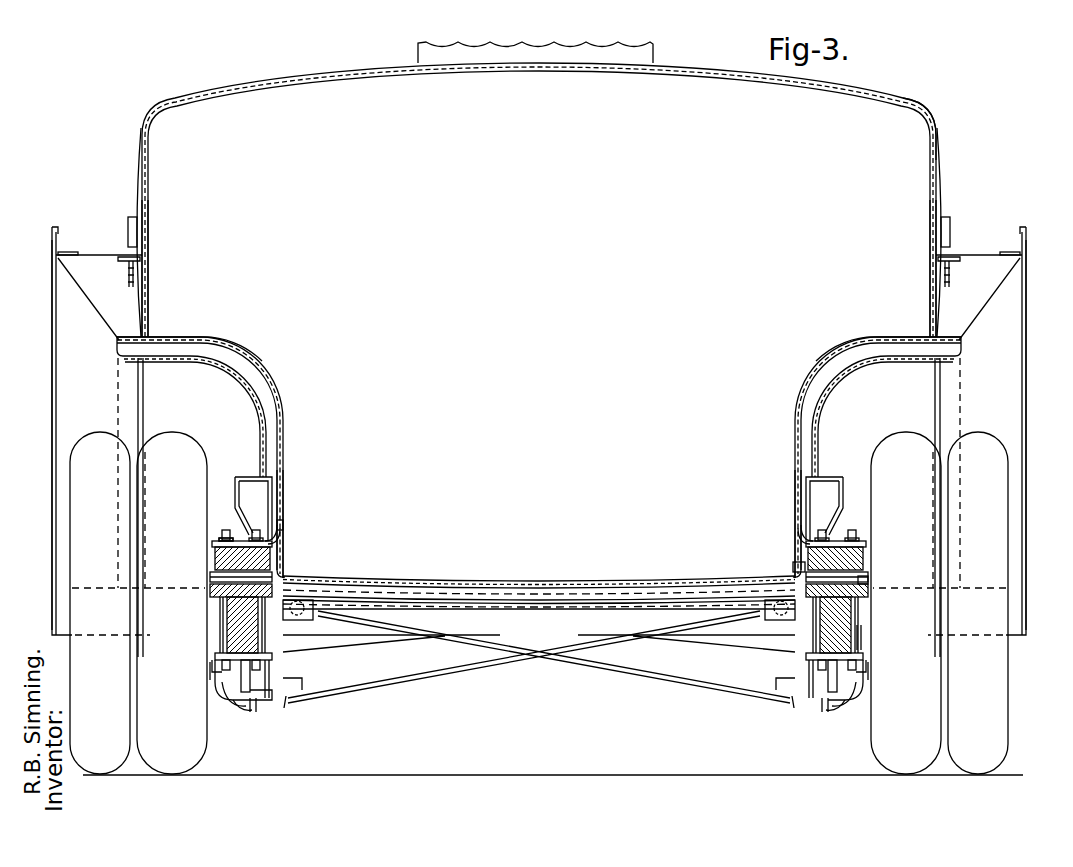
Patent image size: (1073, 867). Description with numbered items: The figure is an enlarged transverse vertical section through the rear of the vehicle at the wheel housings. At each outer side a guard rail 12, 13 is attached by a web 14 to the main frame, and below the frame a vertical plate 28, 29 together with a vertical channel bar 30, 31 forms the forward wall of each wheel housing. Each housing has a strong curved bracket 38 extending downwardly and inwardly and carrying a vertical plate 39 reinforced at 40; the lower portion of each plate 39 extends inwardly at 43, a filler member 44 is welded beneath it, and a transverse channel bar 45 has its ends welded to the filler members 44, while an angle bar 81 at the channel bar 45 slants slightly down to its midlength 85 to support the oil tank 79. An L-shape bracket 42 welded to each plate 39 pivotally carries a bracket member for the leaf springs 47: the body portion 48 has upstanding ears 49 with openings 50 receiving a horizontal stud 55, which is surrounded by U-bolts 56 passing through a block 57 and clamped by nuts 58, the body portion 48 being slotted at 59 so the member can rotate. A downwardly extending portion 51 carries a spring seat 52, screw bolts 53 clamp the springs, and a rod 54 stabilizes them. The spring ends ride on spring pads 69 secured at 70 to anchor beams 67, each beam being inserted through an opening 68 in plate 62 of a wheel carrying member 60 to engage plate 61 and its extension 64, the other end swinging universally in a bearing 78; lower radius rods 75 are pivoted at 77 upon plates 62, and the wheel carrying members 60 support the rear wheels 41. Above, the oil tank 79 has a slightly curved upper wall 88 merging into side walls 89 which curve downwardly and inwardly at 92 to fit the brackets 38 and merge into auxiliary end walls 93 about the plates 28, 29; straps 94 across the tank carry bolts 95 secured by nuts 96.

The guard rail 12 is at (52, 233).
The guard rail 13 is at (1020, 228).
The web 14 is at (87, 258).
The vertical plate 28 is at (160, 384).
The vertical plate 29 is at (918, 380).
The vertical channel bar 30 is at (58, 318).
The vertical channel bar 31 is at (1004, 323).
The curved bracket 38 is at (263, 392).
The vertical plate 39 is at (288, 490).
The reinforcement 40 is at (247, 475).
The rear wheels 41 is at (153, 457).
The L-shape bracket 42 is at (212, 545).
The inwardly extending portion 43 is at (325, 582).
The filler member 44 is at (368, 582).
The transverse channel bar 45 is at (500, 606).
The leaf springs 47 is at (227, 626).
The body portion 48 is at (220, 605).
The ears 49 is at (272, 562).
The openings 50 is at (800, 566).
The downwardly extending portion 51 is at (318, 643).
The spring seat 52 is at (244, 694).
The screw bolts 53 is at (215, 655).
The rod 54 is at (862, 632).
The horizontal stud 55 is at (210, 577).
The U-bolts 56 is at (254, 530).
The block 57 is at (272, 540).
The nuts 58 is at (284, 523).
The slot 59 is at (210, 592).
The wheel carrying member 60 is at (222, 692).
The plate 61 is at (212, 676).
The plate 62 is at (267, 700).
The extension portion 64 is at (272, 698).
The anchor beam 67 is at (472, 662).
The opening 68 is at (254, 712).
The spring pad 69 is at (228, 698).
The weld 70 is at (237, 702).
The lower radius rod 75 is at (320, 700).
The pivot 77 is at (302, 684).
The bearing 78 is at (310, 618).
The oil tank 79 is at (890, 143).
The angle bar support 81 is at (605, 586).
The midlength 85 is at (540, 590).
The upper wall 88 is at (573, 72).
The side wall 89 is at (150, 198).
The curved portion 92 is at (284, 414).
The auxiliary end wall 93 is at (215, 348).
The strap 94 is at (240, 88).
The bolt 95 is at (128, 246).
The nut 96 is at (128, 275).